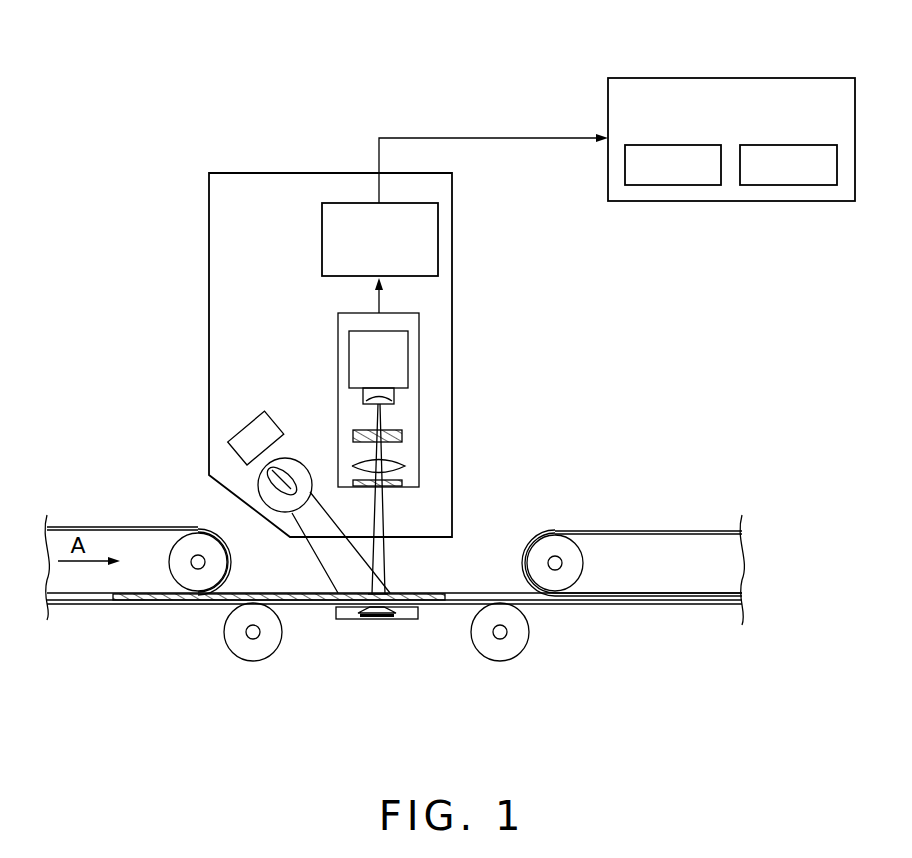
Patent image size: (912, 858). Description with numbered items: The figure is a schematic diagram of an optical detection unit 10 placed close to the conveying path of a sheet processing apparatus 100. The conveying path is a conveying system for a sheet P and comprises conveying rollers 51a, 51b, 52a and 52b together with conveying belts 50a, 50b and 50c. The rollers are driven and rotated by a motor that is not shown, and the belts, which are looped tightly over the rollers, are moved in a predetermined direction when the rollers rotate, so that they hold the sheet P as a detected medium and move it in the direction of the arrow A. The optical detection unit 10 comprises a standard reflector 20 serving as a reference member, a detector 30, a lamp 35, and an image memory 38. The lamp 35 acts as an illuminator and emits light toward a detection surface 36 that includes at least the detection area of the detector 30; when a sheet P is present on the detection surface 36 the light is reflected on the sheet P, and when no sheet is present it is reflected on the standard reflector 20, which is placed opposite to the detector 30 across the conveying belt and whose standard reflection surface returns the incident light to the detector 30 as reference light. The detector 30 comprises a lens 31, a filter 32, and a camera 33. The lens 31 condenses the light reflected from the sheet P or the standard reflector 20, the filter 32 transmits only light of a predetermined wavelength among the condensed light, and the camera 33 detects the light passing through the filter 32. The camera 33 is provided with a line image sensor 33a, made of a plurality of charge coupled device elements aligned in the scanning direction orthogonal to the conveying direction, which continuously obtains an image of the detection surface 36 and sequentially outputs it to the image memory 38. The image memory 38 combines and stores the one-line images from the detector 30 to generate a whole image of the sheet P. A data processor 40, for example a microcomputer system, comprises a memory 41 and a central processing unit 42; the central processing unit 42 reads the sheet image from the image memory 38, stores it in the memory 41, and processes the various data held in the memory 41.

The sheet processing apparatus 100 is at (104, 146).
The optical detection unit 10 is at (250, 165).
The standard reflector 20 is at (381, 630).
The detector 30 is at (330, 340).
The lens 31 is at (404, 465).
The filter 32 is at (402, 436).
The camera 33 is at (408, 345).
The line image sensor 33a is at (380, 360).
The lamp 35 is at (250, 446).
The detection surface 36 is at (378, 592).
The image memory 38 is at (438, 238).
The data processor 40 is at (733, 78).
The memory 41 is at (792, 201).
The central processing unit 42 is at (675, 201).
The conveying belt 50a is at (88, 606).
The conveying belt 50b is at (122, 527).
The conveying belt 50c is at (645, 531).
The conveying roller 51a is at (253, 662).
The conveying roller 51b is at (178, 582).
The conveying roller 52a is at (500, 662).
The conveying roller 52b is at (577, 583).
The sheet P is at (432, 595).